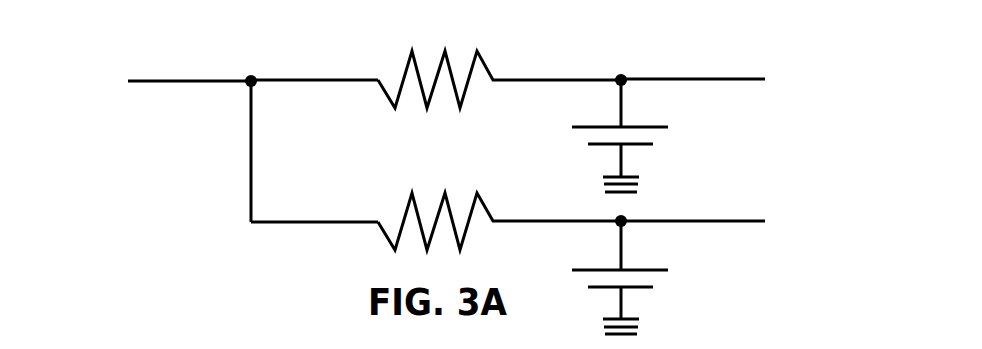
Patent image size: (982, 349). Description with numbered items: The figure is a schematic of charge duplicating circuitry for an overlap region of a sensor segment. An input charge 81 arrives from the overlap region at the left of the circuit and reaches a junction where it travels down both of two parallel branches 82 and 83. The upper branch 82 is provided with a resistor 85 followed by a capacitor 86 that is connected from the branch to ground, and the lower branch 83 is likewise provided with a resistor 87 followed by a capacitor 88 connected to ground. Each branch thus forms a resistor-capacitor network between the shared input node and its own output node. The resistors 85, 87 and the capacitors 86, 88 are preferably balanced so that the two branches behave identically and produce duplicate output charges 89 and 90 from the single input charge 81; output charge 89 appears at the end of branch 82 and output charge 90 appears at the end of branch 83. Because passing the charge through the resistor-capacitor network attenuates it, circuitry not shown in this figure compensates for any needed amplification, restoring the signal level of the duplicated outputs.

The charge 81 is at (100, 62).
The branch 82 is at (327, 78).
The branch 83 is at (322, 221).
The resistor 85 is at (483, 60).
The capacitor 86 is at (662, 137).
The resistor 87 is at (483, 203).
The capacitor 88 is at (662, 282).
The output charge 89 is at (822, 63).
The output charge 90 is at (822, 210).